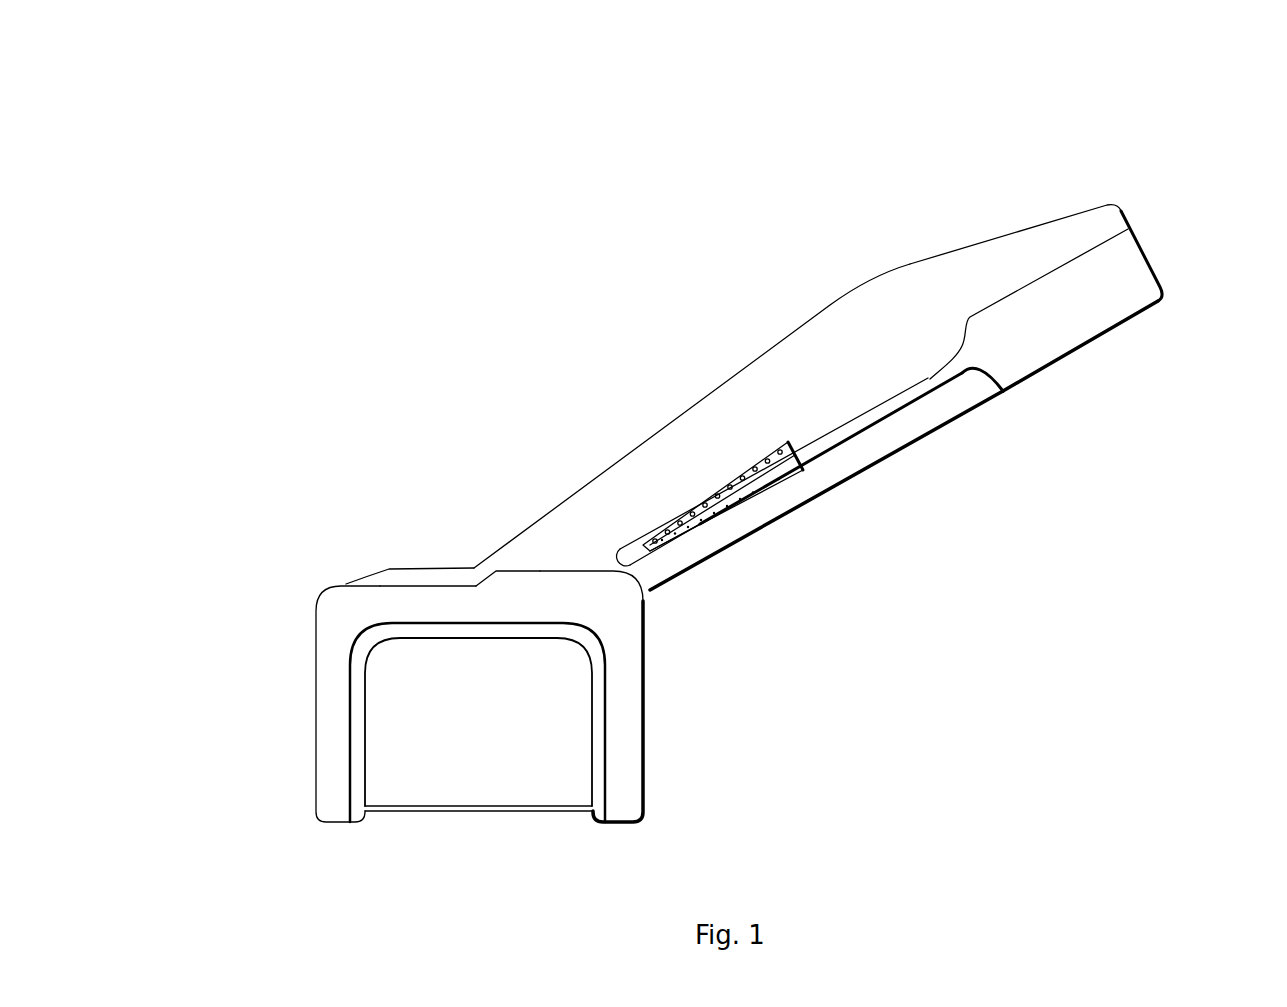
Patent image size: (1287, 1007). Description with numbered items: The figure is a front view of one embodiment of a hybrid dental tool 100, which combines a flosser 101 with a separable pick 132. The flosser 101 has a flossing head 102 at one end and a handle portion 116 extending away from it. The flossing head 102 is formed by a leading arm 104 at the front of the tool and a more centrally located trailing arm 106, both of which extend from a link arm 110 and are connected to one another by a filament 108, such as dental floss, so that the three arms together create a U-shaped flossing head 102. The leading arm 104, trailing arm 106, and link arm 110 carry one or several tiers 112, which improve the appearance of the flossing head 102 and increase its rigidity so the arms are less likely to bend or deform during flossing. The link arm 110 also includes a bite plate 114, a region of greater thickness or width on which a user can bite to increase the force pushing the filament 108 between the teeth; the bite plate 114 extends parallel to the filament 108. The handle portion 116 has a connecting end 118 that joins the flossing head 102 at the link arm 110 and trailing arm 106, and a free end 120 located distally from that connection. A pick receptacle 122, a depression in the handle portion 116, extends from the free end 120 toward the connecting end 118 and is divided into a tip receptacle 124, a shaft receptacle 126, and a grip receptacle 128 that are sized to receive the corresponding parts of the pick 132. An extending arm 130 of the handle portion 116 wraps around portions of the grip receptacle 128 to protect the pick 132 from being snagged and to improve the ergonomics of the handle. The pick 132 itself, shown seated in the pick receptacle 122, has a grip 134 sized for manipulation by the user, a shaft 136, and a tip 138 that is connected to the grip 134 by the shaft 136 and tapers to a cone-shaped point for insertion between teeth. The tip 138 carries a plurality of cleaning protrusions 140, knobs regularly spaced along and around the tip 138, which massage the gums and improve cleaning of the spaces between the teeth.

The hybrid dental tool 100 is at (908, 78).
The flosser 101 is at (621, 354).
The flossing head 102 is at (302, 487).
The leading arm 104 is at (318, 655).
The trailing arm 106 is at (648, 684).
The filament 108 is at (424, 810).
The link arm 110 is at (416, 590).
The tiers 112 is at (366, 742).
The bite plate 114 is at (423, 566).
The handle portion 116 is at (914, 500).
The connecting end 118 is at (662, 602).
The free end 120 is at (1131, 212).
The pick receptacle 122 is at (932, 410).
The tip receptacle 124 is at (730, 521).
The shaft receptacle 126 is at (862, 436).
The grip receptacle 128 is at (1060, 257).
The extending arm 130 is at (991, 240).
The pick 132 is at (1058, 384).
The grip 134 is at (1158, 264).
The shaft 136 is at (930, 380).
The tip 138 is at (788, 457).
The cleaning protrusions 140 is at (690, 533).